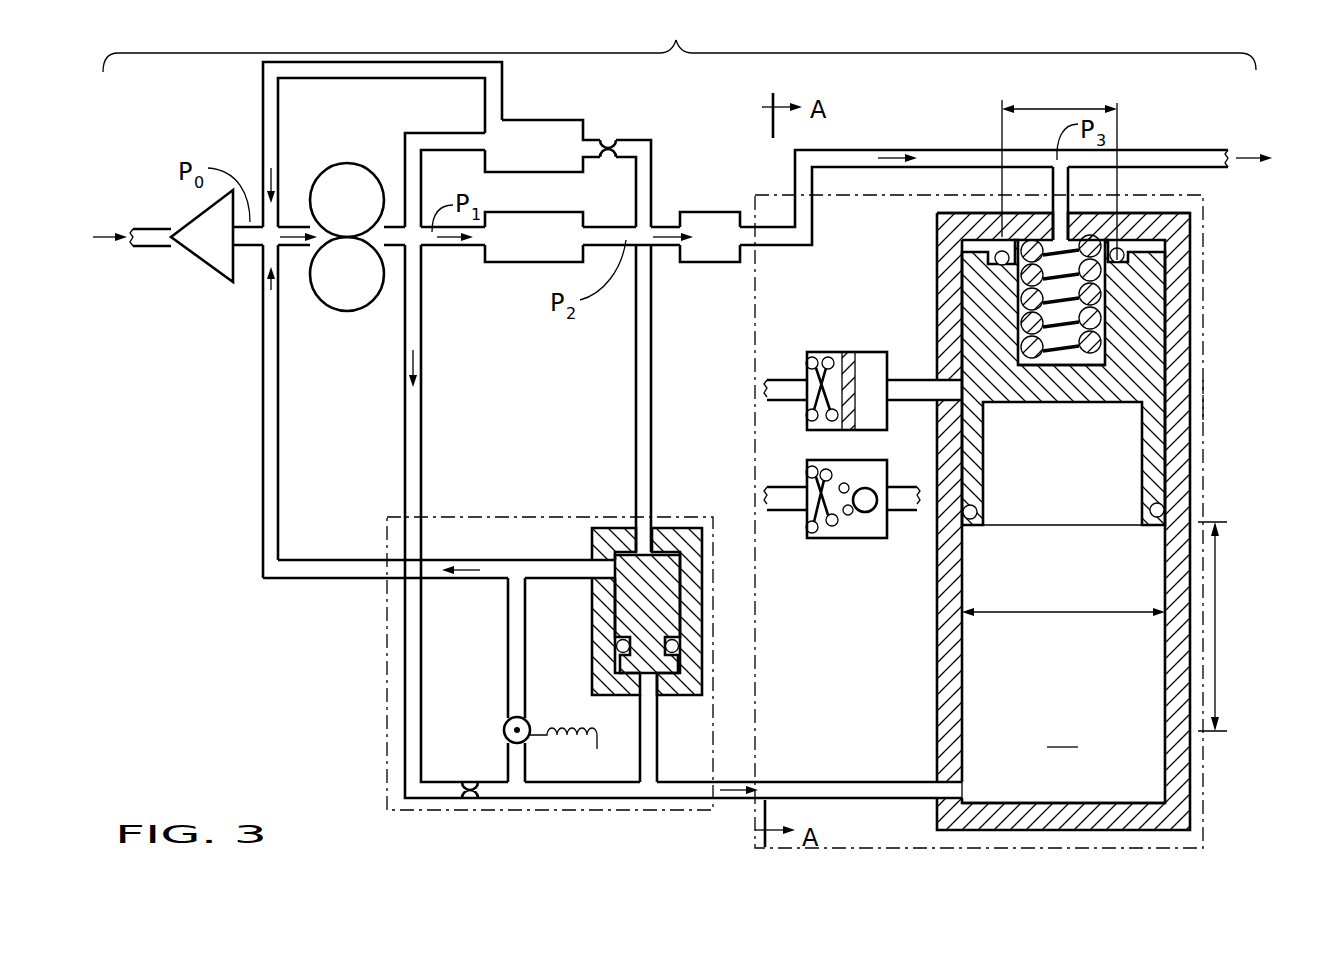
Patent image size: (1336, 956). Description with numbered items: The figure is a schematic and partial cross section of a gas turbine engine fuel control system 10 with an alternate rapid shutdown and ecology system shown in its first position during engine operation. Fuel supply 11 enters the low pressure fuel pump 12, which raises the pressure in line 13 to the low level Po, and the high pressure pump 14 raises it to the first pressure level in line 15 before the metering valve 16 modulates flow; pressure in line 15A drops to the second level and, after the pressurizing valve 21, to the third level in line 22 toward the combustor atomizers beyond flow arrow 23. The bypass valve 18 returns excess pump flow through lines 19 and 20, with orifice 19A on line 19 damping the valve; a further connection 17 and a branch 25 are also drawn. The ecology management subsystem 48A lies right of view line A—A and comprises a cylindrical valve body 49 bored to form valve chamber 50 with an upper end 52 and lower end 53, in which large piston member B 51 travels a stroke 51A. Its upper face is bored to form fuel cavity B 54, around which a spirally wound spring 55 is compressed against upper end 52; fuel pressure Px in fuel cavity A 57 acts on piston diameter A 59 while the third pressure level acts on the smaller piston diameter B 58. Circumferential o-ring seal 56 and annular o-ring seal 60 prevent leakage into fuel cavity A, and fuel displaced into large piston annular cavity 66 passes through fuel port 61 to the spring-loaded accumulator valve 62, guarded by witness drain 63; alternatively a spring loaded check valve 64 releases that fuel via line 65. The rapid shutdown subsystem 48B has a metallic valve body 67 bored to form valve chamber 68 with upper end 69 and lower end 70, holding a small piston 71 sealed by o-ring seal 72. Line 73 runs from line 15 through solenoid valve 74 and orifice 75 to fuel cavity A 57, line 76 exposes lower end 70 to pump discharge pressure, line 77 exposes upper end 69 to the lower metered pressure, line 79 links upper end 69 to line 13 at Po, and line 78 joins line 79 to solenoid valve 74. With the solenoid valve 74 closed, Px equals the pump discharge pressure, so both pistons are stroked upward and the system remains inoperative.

The gas turbine engine fuel control system 10 is at (676, 40).
The fuel supply 11 is at (103, 242).
The low pressure fuel pump 12 is at (220, 268).
The line 13 is at (302, 247).
The high pressure pump 14 is at (343, 283).
The line 15 is at (450, 246).
The line 15A is at (613, 226).
The metering valve 16 is at (533, 263).
The bypass conduit 17 is at (403, 157).
The bypass valve 18 is at (530, 133).
The line 19 is at (653, 180).
The orifice 19A is at (608, 140).
The line 20 is at (380, 80).
The pressurizing valve 21 is at (715, 211).
The line 22 is at (850, 149).
The flow arrow 23 is at (1247, 150).
The branch conduit 25 is at (1068, 178).
The ecology management subsystem 48A is at (1205, 425).
The rapid shutdown subsystem 48B is at (387, 628).
The valve body 49 is at (1203, 400).
The valve chamber 50 is at (1173, 358).
The large piston member B 51 is at (1185, 315).
The stroke 51A is at (1222, 627).
The upper end 52 is at (1153, 210).
The lower end 53 is at (1040, 803).
The fuel cavity B 54 is at (1098, 297).
The spring 55 is at (1060, 366).
The circumferential o-ring seal 56 is at (1123, 257).
The fuel cavity A 57 is at (1082, 692).
The piston diameter B 58 is at (1060, 104).
The piston diameter A 59 is at (1064, 612).
The annular o-ring seal 60 is at (1162, 505).
The fuel port 61 is at (937, 390).
The accumulator valve 62 is at (822, 407).
The witness drain 63 is at (783, 388).
The spring loaded check valve 64 is at (853, 527).
The line 65 is at (787, 497).
The large piston annular cavity 66 is at (963, 265).
The valve body 67 is at (615, 528).
The valve chamber 68 is at (640, 697).
The upper end 69 is at (662, 550).
The lower end 70 is at (663, 668).
The small piston 71 is at (645, 612).
The o-ring seal 72 is at (672, 645).
The line 73 is at (423, 685).
The solenoid valve 74 is at (510, 722).
The orifice 75 is at (472, 778).
The line 76 is at (657, 752).
The line 77 is at (655, 370).
The line 78 is at (525, 628).
The line 79 is at (477, 562).